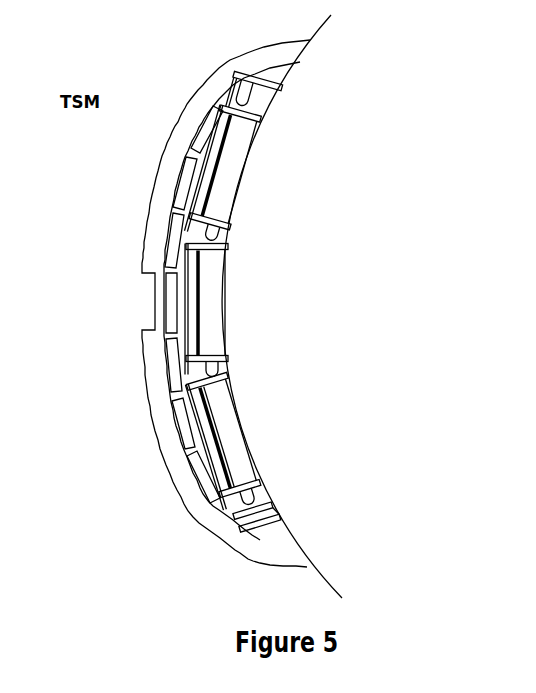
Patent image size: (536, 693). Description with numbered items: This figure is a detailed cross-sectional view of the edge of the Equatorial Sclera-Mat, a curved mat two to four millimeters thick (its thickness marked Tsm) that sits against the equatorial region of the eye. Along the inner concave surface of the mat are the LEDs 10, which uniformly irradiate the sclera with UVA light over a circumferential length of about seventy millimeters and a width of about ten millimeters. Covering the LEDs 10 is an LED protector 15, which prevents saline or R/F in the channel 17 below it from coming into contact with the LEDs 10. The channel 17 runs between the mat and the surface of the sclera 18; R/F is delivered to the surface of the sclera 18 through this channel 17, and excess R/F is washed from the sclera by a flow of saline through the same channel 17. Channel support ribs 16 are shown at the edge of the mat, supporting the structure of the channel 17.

The LEDs 10 is at (232, 173).
The LED protector 15 is at (239, 438).
The channel support ribs 16 is at (282, 513).
The channel 17 is at (247, 412).
The surface of the sclera 18 is at (244, 342).